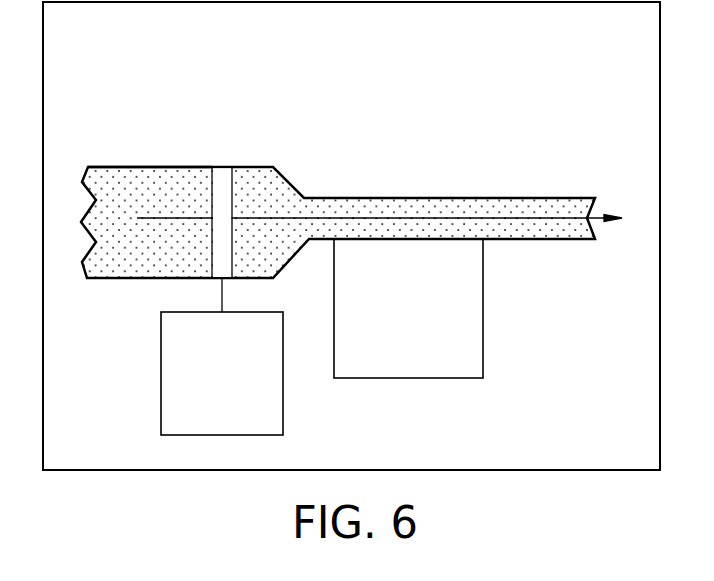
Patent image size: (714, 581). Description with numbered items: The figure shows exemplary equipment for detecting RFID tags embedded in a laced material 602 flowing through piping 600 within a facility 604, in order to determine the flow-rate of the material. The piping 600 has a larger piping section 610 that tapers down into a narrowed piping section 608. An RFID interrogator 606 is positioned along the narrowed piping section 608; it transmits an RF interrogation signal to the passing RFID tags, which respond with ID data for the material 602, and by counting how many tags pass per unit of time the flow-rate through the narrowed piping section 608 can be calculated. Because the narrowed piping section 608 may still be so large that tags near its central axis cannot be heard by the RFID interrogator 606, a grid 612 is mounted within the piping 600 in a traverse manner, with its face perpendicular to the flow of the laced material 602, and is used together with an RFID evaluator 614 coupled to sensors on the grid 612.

The piping 600 is at (141, 104).
The laced material 602 is at (163, 265).
The facility 604 is at (581, 108).
The RFID interrogator 606 is at (444, 353).
The narrowed piping section 608 is at (435, 198).
The piping section 610 is at (117, 167).
The grid 612 is at (221, 183).
The RFID evaluator 614 is at (250, 417).